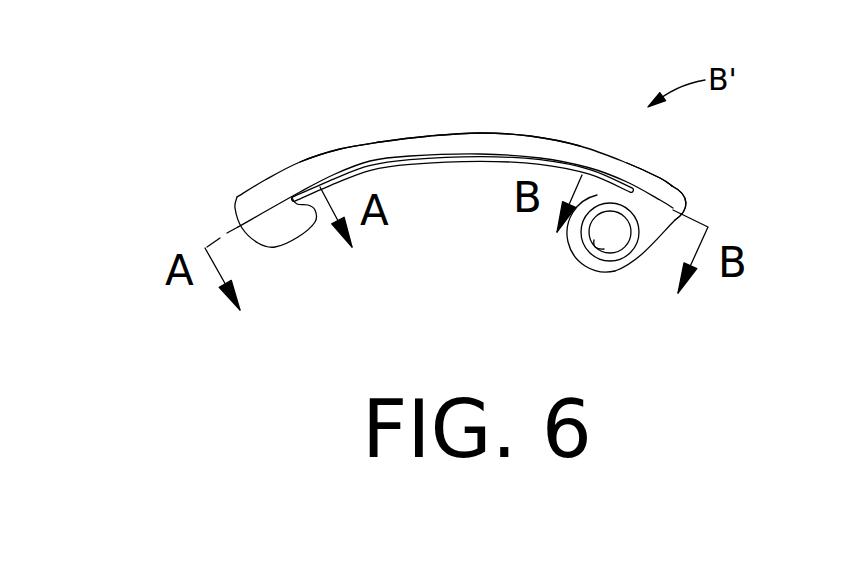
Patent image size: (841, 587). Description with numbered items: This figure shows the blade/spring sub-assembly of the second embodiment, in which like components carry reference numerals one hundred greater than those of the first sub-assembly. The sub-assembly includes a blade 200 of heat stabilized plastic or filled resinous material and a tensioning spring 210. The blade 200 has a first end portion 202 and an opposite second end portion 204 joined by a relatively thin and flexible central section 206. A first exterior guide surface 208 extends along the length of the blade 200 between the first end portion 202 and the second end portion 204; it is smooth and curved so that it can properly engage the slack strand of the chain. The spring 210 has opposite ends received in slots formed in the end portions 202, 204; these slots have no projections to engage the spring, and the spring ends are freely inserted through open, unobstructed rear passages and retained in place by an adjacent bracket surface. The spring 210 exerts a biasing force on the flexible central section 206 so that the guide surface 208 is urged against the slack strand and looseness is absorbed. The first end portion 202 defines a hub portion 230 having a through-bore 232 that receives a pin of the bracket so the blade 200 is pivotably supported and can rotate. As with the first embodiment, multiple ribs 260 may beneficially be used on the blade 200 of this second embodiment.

The blade 200 is at (327, 170).
The first end portion 202 is at (660, 190).
The second end portion 204 is at (233, 205).
The central section 206 is at (462, 147).
The exterior guide surface 208 is at (507, 137).
The tensioning spring 210 is at (487, 160).
The hub portion 230 is at (642, 267).
The through-bore 232 is at (603, 250).
The ribs 260 is at (670, 210).